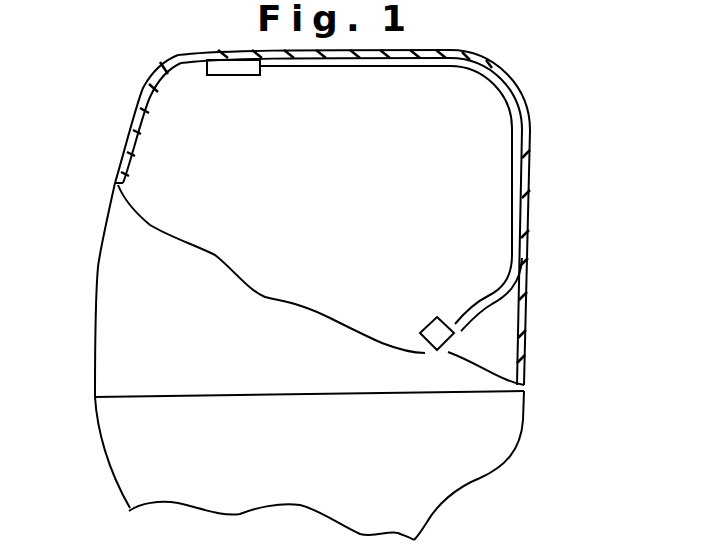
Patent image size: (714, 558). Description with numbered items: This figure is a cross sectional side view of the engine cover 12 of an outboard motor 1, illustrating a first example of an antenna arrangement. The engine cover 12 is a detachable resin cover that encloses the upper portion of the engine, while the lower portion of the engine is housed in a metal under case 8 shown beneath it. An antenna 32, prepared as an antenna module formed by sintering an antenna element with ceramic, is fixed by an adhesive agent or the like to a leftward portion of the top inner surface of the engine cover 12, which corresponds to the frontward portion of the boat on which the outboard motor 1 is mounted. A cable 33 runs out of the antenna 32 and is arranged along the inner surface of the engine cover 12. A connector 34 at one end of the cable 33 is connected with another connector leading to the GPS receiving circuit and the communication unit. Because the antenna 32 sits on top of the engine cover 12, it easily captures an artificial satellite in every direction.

The outboard motor 1 is at (572, 143).
The under case 8 is at (118, 440).
The engine cover 12 is at (117, 268).
The antenna 32 is at (243, 70).
The cable 33 is at (412, 67).
The connector 34 is at (432, 322).